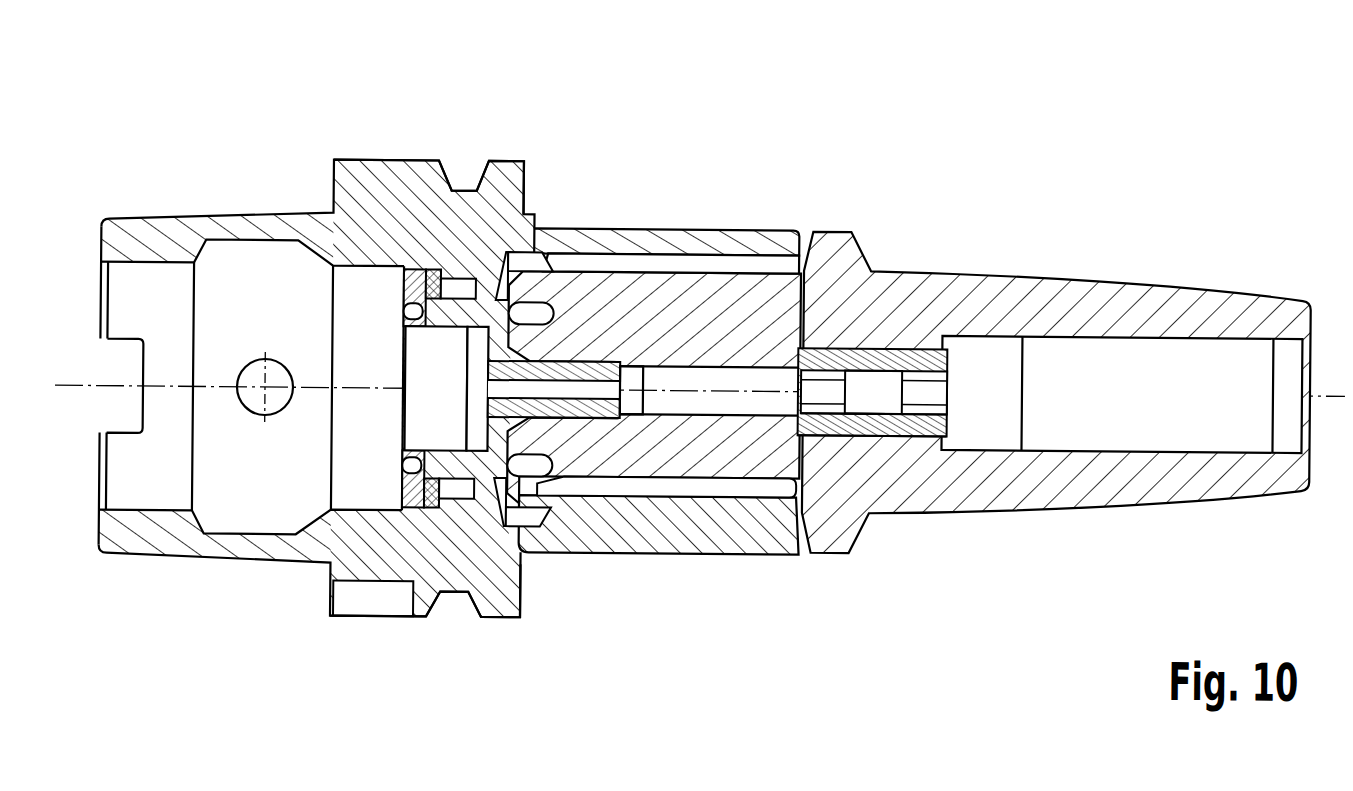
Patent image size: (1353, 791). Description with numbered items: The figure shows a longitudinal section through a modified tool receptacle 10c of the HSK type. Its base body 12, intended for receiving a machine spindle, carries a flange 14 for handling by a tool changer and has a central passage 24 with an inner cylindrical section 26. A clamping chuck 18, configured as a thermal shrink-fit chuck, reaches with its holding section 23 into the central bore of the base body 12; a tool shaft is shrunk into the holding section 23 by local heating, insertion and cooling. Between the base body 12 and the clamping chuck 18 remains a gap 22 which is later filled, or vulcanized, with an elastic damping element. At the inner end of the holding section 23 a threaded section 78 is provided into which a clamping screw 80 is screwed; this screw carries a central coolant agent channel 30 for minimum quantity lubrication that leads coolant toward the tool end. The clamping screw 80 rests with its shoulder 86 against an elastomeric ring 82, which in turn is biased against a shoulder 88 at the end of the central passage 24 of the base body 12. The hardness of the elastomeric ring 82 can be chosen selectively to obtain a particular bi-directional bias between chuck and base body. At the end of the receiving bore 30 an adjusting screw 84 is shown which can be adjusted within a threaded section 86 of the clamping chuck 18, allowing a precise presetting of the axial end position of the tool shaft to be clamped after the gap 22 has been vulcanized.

The tool receptacle 10c is at (1170, 181).
The base body 12 is at (248, 201).
The flange 14 is at (392, 190).
The clamping chuck 18 is at (948, 266).
The gap 22 is at (746, 263).
The holding section 23 is at (668, 287).
The central passage 24 is at (247, 500).
The inner cylindrical section 26 is at (155, 488).
The coolant agent channel 30 is at (583, 355).
The threaded section 78 is at (637, 425).
The clamping screw 80 is at (528, 510).
The elastomeric ring 82 is at (440, 487).
The adjusting screw 84 is at (890, 432).
The shoulder 86 is at (878, 340).
The shoulder 88 is at (438, 484).